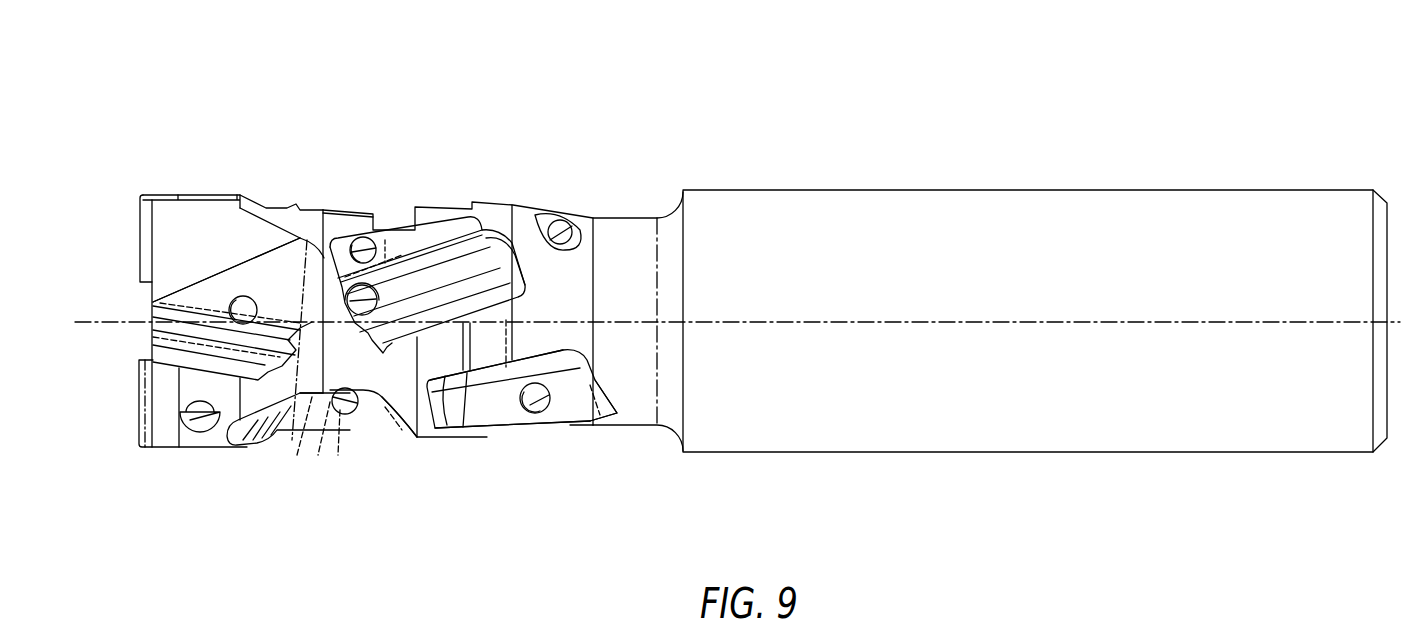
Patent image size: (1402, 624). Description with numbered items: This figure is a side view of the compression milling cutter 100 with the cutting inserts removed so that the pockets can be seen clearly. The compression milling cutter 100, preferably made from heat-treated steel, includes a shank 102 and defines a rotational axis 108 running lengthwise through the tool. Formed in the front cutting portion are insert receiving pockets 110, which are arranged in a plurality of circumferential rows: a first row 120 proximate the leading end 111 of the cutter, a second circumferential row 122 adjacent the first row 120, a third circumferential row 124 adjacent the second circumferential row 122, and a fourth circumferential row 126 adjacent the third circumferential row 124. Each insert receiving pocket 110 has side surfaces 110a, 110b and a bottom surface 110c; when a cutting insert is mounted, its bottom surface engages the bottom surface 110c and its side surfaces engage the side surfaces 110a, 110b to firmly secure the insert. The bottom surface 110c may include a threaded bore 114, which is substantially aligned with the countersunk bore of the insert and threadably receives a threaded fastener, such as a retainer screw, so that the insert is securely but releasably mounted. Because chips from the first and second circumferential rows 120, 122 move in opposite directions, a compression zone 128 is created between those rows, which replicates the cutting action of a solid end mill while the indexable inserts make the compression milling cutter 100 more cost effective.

The compression milling cutter 100 is at (993, 88).
The shank 102 is at (1104, 424).
The rotational axis 108 is at (93, 324).
The insert receiving pocket 110 is at (191, 285).
The side surface of the insert receiving pocket 110a is at (305, 427).
The side surface of the insert receiving pocket 110b is at (390, 410).
The bottom surface of the insert receiving pocket 110c is at (317, 420).
The leading end 111 is at (116, 293).
The threaded bore 114 is at (343, 418).
The first row 120 is at (167, 175).
The second circumferential row 122 is at (327, 170).
The third circumferential row 124 is at (429, 172).
The fourth circumferential row 126 is at (538, 188).
The compression zone 128 is at (303, 180).